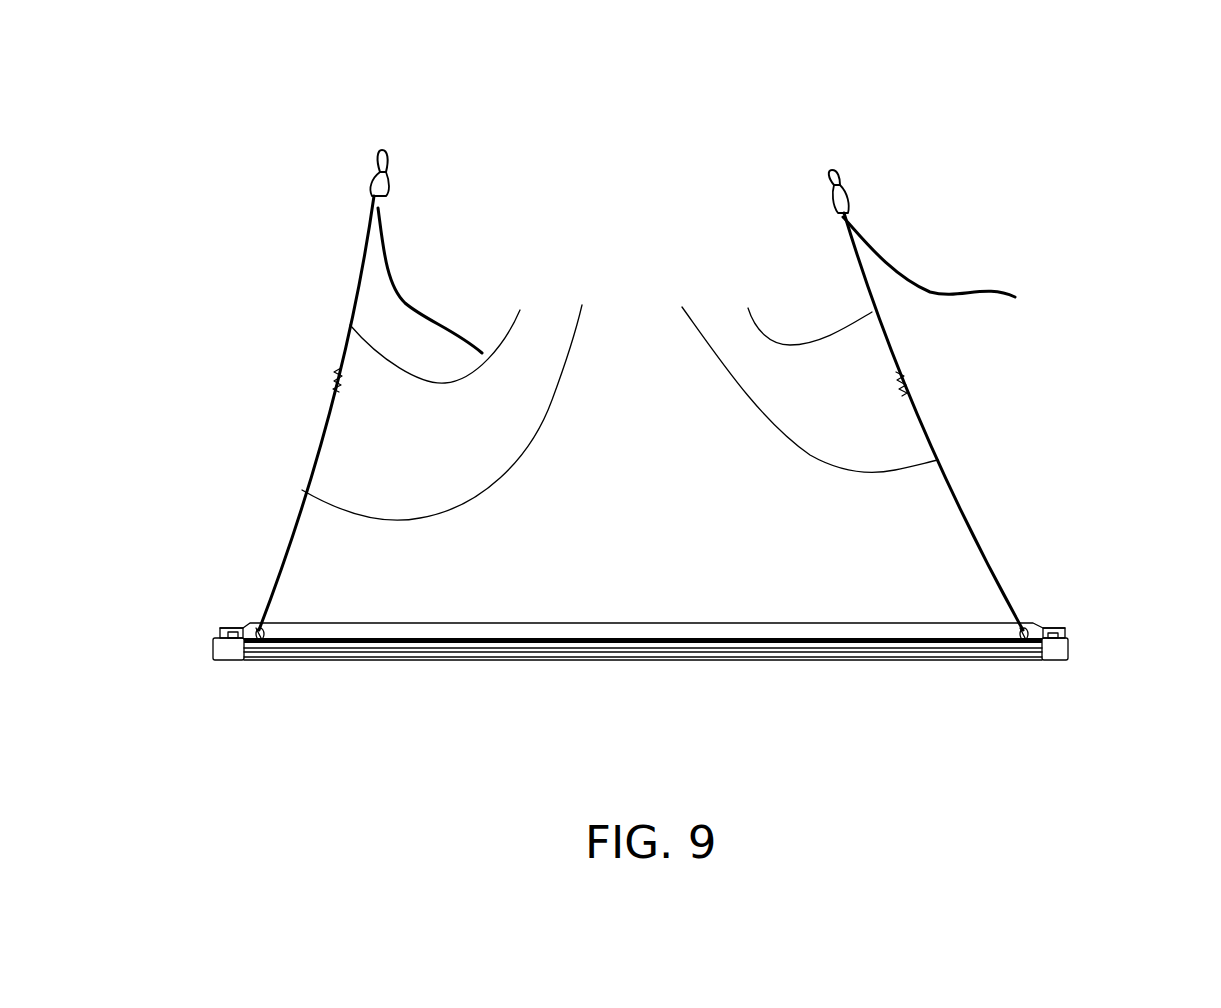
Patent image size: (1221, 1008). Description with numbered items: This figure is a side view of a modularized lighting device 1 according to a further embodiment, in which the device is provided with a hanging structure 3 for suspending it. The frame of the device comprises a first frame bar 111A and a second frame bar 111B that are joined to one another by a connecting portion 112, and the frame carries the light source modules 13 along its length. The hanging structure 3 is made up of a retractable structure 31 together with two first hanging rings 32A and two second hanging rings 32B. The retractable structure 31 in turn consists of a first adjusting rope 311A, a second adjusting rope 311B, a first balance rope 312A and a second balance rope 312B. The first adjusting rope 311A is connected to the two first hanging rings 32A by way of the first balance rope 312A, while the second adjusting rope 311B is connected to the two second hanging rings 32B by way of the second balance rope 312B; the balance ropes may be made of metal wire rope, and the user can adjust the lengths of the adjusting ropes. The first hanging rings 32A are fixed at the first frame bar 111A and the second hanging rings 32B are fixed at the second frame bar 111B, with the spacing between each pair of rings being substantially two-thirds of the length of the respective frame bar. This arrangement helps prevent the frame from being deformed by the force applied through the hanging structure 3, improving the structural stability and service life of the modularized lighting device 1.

The modularized lighting device 1 is at (652, 612).
The hanging structure 3 is at (641, 345).
The retractable structure 31 is at (620, 375).
The first adjusting rope 311A is at (447, 333).
The first balance rope 312A is at (456, 401).
The second balance rope 312B is at (796, 377).
The second adjusting rope 311B is at (799, 314).
The first hanging rings 32A is at (258, 632).
The second hanging rings 32B is at (1028, 628).
The first frame bar 111A is at (218, 637).
The second frame bar 111B is at (1065, 638).
The connecting portion 112 is at (767, 627).
The light source modules 13 is at (943, 656).